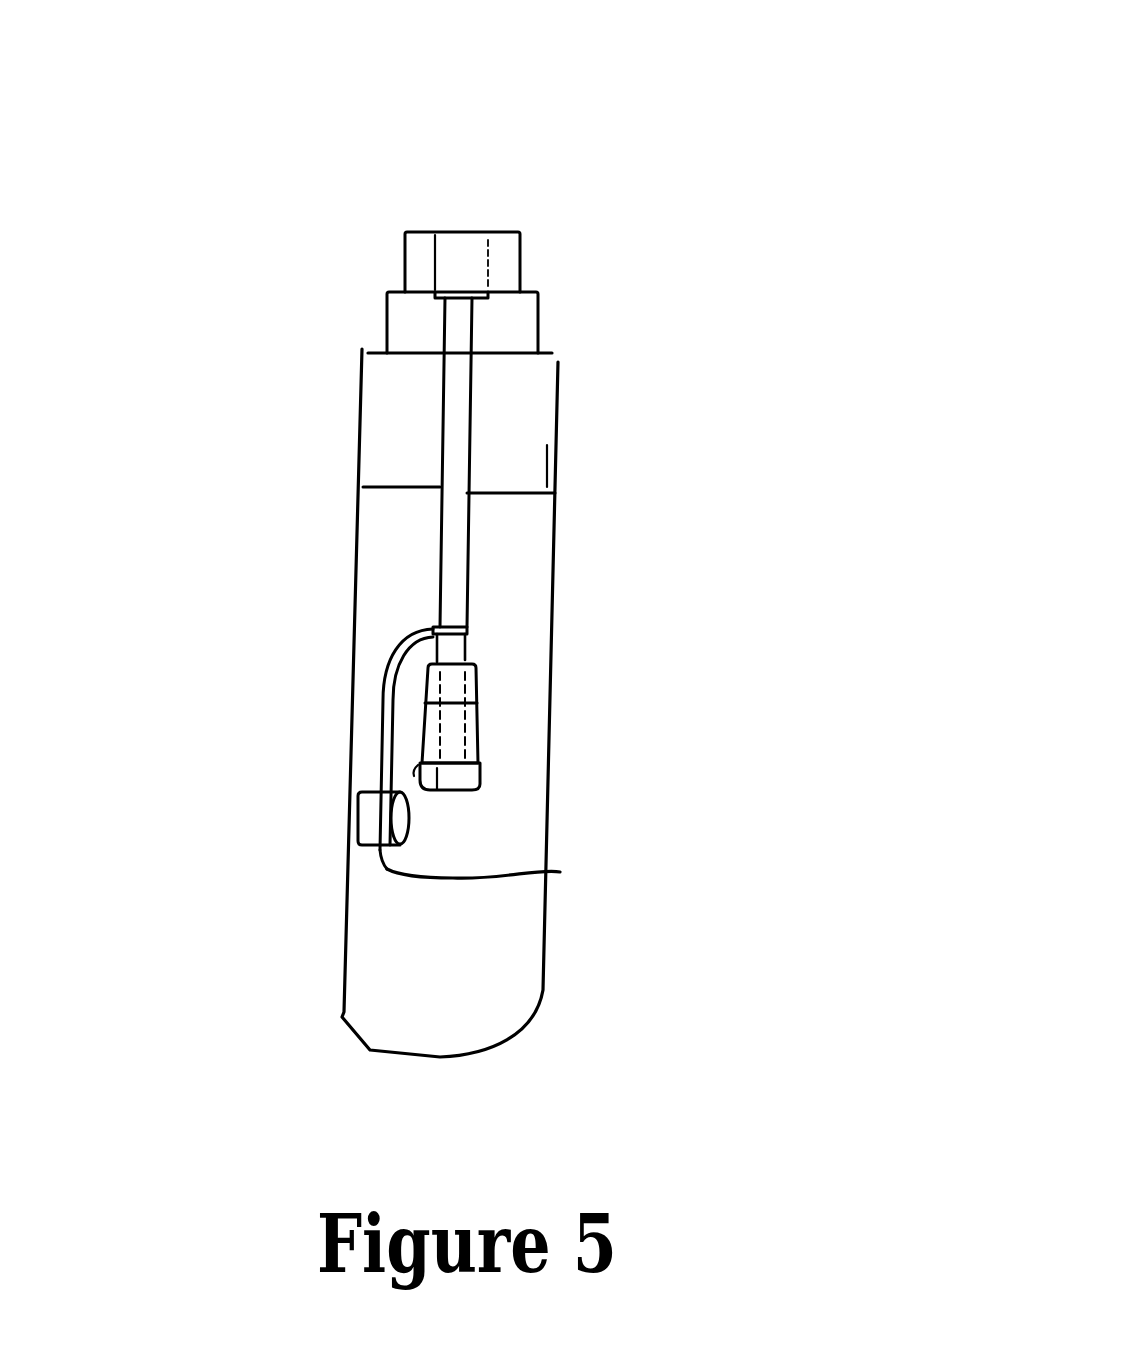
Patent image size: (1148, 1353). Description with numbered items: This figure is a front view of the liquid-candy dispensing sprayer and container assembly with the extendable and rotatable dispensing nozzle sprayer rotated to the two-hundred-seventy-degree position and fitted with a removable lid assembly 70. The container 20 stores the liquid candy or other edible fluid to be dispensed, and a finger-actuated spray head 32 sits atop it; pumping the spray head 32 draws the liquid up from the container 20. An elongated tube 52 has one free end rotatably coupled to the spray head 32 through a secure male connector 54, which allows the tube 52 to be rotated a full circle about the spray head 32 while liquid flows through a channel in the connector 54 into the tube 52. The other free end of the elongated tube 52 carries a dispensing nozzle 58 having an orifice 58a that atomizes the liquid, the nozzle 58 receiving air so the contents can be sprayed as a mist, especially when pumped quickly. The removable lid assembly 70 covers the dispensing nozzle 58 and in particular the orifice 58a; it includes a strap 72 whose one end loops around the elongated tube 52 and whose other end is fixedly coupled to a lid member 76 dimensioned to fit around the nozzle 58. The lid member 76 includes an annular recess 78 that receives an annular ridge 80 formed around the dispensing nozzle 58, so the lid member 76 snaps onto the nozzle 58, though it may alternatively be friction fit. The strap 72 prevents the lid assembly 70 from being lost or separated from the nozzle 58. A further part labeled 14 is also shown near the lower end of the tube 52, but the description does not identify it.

The container 20 is at (533, 838).
The finger-actuated spray head 32 is at (708, 186).
The secure male connector 54 is at (470, 260).
The elongated tube 52 is at (462, 552).
The connector 14 is at (477, 627).
The dispensing nozzle 58 is at (488, 720).
The orifice 58a is at (480, 770).
The strap 72 is at (383, 713).
The removable lid assembly 70 is at (165, 876).
The annular ridge 80 is at (415, 768).
The lid member 76 is at (375, 850).
The annular recess 78 is at (688, 886).